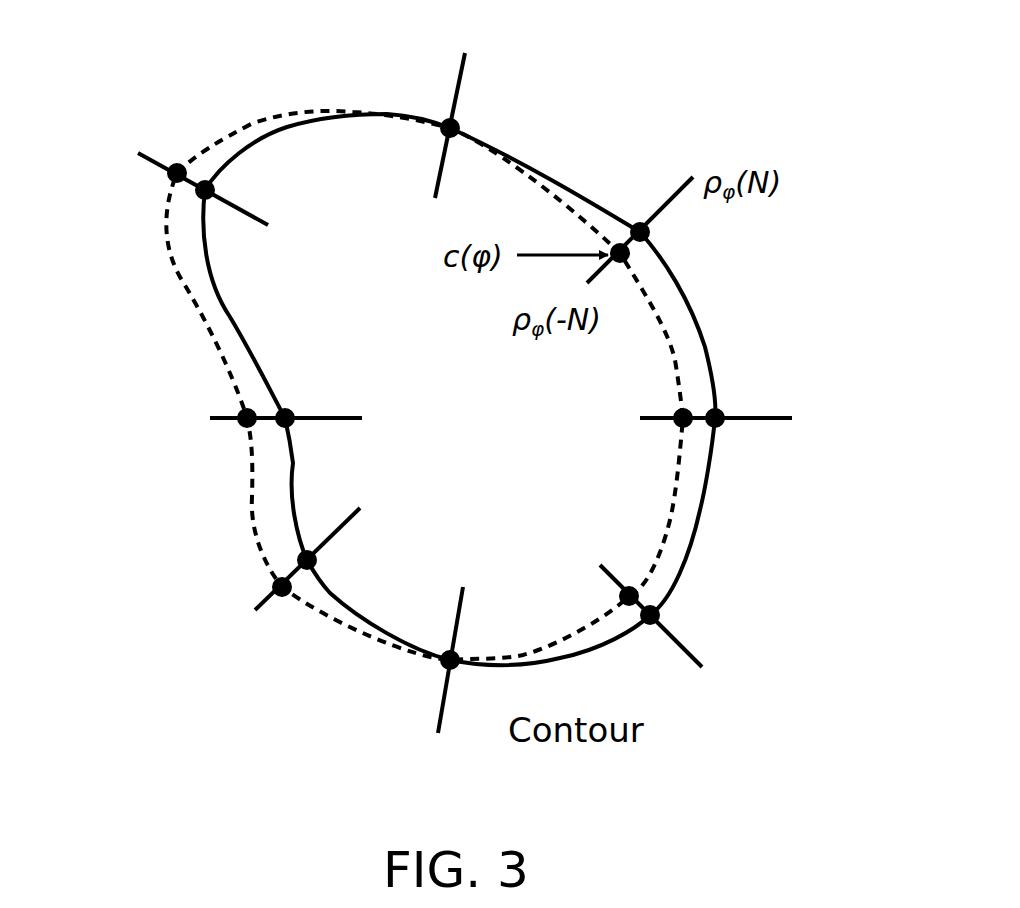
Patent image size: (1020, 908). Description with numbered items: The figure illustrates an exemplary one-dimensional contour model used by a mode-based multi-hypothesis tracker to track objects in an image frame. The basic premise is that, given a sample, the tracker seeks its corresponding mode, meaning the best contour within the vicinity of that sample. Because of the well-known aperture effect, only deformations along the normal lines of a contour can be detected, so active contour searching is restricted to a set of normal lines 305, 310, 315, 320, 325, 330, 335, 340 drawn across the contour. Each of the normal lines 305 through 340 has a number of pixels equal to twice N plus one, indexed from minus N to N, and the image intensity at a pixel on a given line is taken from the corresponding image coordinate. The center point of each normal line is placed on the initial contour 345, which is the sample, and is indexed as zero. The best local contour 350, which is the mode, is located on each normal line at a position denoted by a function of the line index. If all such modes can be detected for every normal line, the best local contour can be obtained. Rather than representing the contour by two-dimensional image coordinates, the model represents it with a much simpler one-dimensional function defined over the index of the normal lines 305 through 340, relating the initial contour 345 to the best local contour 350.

The normal line 305 is at (480, 67).
The normal line 310 is at (677, 212).
The normal line 315 is at (767, 412).
The normal line 320 is at (688, 633).
The normal line 325 is at (432, 688).
The normal line 330 is at (258, 587).
The normal line 335 is at (218, 407).
The normal line 340 is at (157, 150).
The initial contour 345 is at (573, 173).
The best local contour 350 is at (155, 220).